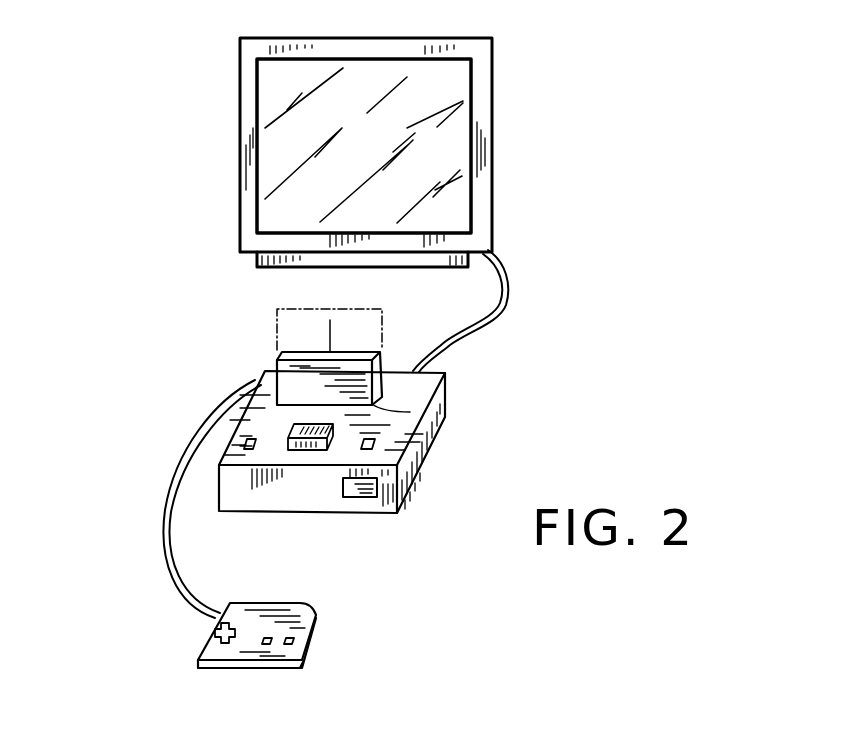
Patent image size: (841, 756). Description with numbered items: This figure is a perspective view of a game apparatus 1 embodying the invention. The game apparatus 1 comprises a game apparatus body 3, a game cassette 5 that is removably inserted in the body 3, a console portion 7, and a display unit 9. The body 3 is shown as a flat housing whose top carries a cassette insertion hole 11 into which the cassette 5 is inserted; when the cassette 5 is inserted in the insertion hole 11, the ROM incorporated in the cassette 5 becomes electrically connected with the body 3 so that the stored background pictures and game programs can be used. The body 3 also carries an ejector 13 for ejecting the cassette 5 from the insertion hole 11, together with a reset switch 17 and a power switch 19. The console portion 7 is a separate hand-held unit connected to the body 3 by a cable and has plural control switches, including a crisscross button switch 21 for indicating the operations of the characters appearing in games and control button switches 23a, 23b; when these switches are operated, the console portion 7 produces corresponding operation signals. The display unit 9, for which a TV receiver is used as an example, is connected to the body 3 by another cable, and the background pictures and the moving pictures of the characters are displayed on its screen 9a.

The game apparatus 1 is at (507, 348).
The game apparatus body 3 is at (432, 436).
The game cassette 5 is at (383, 357).
The console portion 7 is at (318, 628).
The display unit 9 is at (492, 168).
The screen 9a is at (420, 93).
The cassette insertion hole 11 is at (375, 402).
The ejector 13 is at (316, 450).
The reset switch 17 is at (244, 448).
The power switch 19 is at (372, 497).
The crisscross button switch 21 is at (212, 630).
The control button switch 23a is at (262, 646).
The control button switch 23b is at (288, 647).